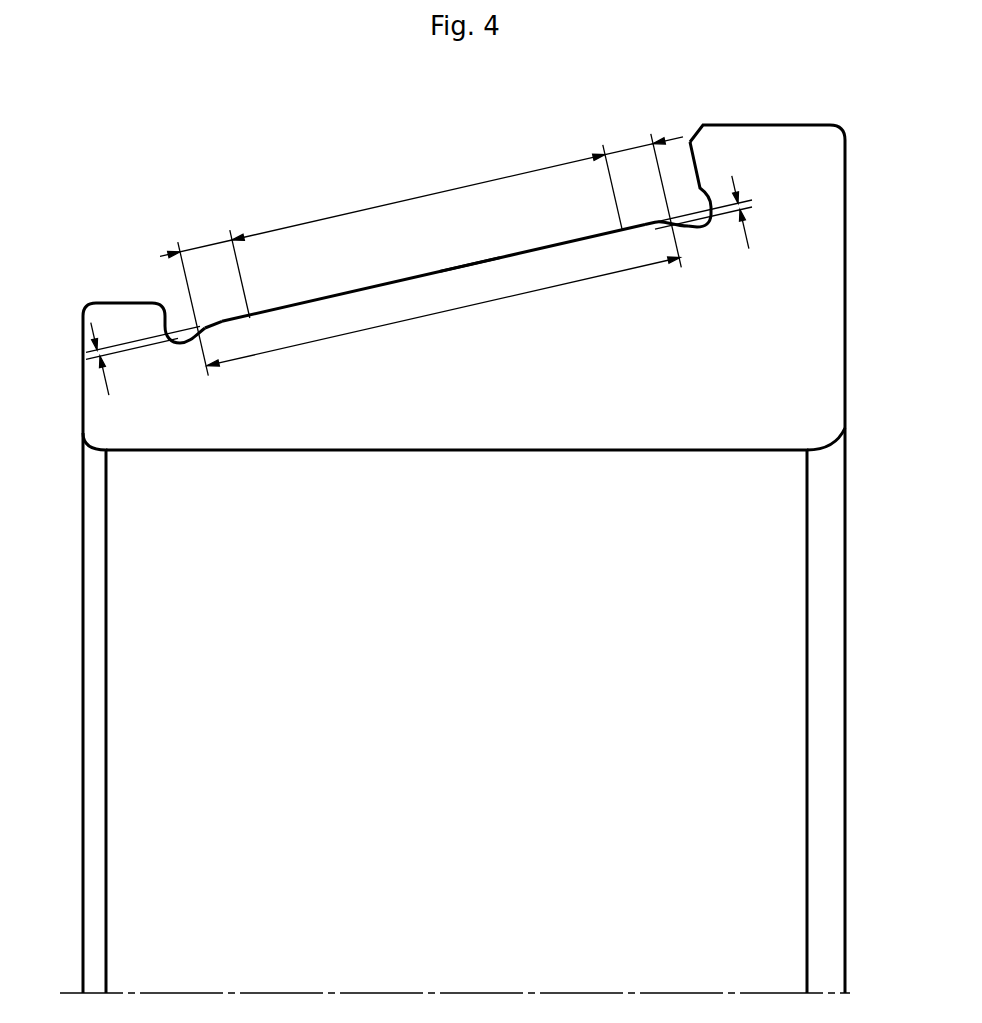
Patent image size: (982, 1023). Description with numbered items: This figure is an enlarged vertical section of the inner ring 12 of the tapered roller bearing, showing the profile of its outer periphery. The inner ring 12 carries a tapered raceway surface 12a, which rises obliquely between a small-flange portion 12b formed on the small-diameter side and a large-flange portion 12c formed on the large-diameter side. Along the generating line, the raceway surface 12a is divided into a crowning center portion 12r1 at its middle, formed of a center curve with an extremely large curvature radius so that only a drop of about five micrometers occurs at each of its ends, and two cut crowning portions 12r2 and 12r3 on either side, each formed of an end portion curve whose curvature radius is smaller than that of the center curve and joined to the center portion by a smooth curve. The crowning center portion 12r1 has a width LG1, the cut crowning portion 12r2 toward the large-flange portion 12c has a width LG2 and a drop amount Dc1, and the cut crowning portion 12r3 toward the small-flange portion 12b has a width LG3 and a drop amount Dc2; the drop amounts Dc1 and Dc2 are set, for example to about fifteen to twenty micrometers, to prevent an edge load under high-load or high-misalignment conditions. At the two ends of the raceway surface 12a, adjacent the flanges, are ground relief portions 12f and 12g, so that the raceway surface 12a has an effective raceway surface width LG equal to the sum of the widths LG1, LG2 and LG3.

The inner ring 12 is at (562, 384).
The raceway surface 12a is at (397, 281).
The small-flange portion 12b is at (125, 322).
The large-flange portion 12c is at (775, 153).
The ground relief portion 12f is at (708, 233).
The ground relief portion 12g is at (200, 342).
The crowning center portion 12r1 is at (467, 262).
The cut crowning portion 12r2 is at (630, 227).
The cut crowning portion 12r3 is at (223, 321).
The effective raceway surface width LG is at (450, 313).
The width of crowning center portion LG1 is at (408, 202).
The width of cut crowning portion LG2 is at (627, 150).
The width of cut crowning portion LG3 is at (205, 243).
The drop amount Dc1 is at (738, 215).
The drop amount Dc2 is at (143, 360).